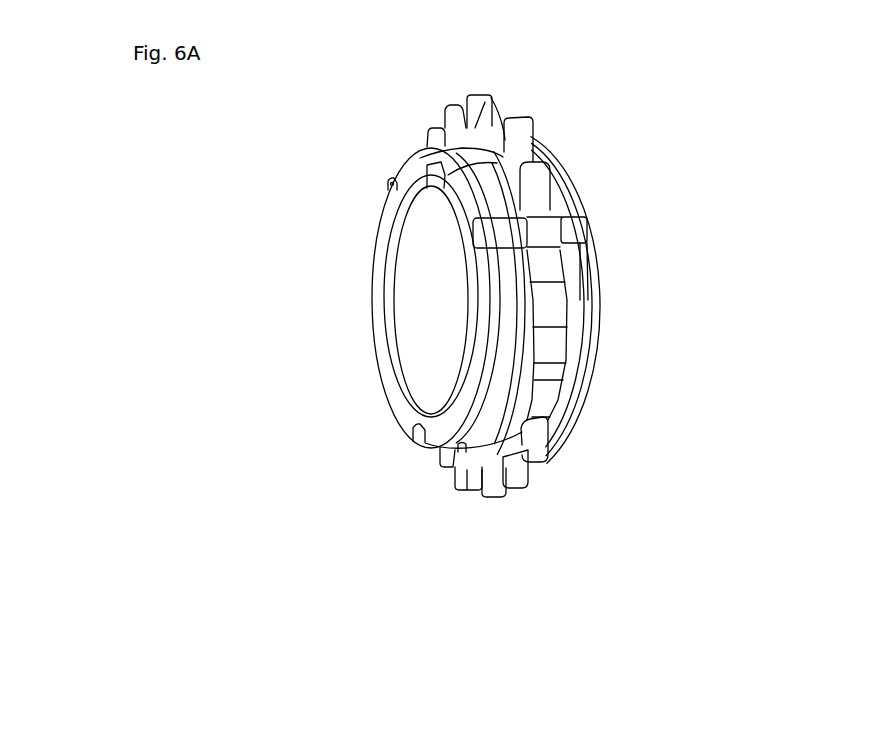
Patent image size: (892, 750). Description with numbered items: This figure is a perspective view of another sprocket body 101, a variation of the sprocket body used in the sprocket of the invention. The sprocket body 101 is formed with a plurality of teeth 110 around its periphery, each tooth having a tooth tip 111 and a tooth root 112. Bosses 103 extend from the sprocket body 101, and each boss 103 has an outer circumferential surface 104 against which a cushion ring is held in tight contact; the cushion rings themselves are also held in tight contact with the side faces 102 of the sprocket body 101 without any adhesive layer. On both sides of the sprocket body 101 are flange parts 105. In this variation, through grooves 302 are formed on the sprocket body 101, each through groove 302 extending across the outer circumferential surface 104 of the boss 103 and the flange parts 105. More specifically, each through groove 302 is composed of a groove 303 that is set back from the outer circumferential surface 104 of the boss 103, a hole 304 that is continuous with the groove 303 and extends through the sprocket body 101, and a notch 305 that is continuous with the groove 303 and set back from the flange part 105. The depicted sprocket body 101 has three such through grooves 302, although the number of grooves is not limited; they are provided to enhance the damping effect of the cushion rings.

The sprocket body 101 is at (498, 279).
The side face 102 is at (553, 150).
The boss 103 is at (392, 416).
The outer circumferential surface 104 is at (505, 352).
The flange part 105 is at (497, 325).
The teeth 110 is at (518, 87).
The tooth tip 111 is at (502, 103).
The tooth root 112 is at (515, 118).
The through groove 302 is at (542, 323).
The groove 303 is at (523, 212).
The hole 304 is at (545, 249).
The notch 305 is at (588, 236).